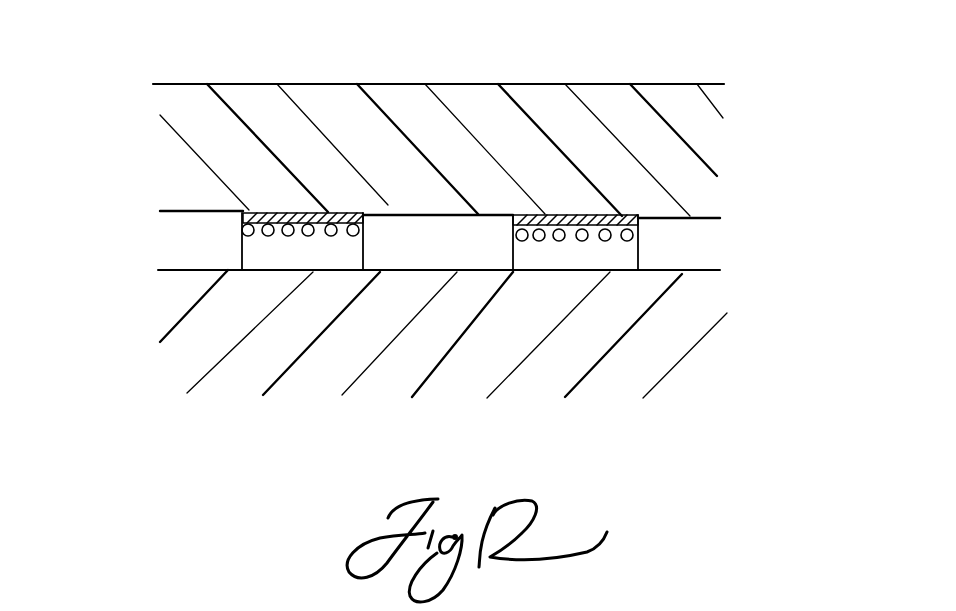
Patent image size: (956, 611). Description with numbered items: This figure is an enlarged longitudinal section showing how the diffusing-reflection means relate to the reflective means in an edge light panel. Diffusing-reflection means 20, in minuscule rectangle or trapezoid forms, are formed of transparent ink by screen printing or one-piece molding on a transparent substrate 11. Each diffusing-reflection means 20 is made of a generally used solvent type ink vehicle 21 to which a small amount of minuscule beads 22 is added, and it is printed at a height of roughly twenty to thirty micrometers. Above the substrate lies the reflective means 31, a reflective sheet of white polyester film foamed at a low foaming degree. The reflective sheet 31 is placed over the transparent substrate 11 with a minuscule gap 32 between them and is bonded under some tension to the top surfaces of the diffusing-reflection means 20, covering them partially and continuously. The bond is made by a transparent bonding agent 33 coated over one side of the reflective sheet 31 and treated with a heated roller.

The transparent substrate 11 is at (495, 350).
The diffusing-reflection means 20 is at (367, 217).
The solvent type ink vehicle 21 is at (523, 242).
The minuscule beads 22 is at (640, 238).
The reflective means 31 is at (683, 92).
The minuscule gap 32 is at (403, 242).
The transparent bonding agent 33 is at (243, 220).